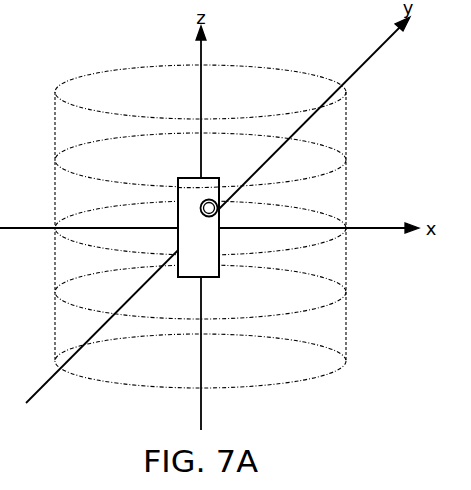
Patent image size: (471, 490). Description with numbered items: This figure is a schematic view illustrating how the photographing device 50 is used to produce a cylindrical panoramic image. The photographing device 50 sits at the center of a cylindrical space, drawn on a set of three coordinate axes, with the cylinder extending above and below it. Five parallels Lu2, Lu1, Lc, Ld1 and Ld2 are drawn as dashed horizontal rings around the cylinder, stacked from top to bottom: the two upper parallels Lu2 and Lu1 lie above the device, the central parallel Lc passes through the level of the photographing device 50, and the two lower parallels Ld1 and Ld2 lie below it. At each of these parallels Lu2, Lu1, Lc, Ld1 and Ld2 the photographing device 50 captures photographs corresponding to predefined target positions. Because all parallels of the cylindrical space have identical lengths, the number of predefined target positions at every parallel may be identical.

The photographing device 50 is at (210, 268).
The parallel Lu2 is at (282, 82).
The parallel Lu1 is at (336, 158).
The parallel Lc is at (341, 218).
The parallel Ld1 is at (337, 292).
The parallel Ld2 is at (338, 362).